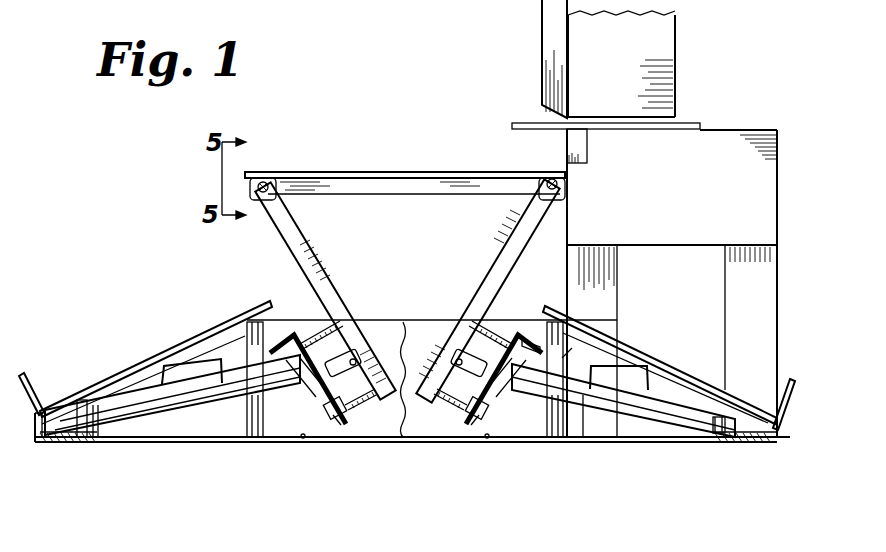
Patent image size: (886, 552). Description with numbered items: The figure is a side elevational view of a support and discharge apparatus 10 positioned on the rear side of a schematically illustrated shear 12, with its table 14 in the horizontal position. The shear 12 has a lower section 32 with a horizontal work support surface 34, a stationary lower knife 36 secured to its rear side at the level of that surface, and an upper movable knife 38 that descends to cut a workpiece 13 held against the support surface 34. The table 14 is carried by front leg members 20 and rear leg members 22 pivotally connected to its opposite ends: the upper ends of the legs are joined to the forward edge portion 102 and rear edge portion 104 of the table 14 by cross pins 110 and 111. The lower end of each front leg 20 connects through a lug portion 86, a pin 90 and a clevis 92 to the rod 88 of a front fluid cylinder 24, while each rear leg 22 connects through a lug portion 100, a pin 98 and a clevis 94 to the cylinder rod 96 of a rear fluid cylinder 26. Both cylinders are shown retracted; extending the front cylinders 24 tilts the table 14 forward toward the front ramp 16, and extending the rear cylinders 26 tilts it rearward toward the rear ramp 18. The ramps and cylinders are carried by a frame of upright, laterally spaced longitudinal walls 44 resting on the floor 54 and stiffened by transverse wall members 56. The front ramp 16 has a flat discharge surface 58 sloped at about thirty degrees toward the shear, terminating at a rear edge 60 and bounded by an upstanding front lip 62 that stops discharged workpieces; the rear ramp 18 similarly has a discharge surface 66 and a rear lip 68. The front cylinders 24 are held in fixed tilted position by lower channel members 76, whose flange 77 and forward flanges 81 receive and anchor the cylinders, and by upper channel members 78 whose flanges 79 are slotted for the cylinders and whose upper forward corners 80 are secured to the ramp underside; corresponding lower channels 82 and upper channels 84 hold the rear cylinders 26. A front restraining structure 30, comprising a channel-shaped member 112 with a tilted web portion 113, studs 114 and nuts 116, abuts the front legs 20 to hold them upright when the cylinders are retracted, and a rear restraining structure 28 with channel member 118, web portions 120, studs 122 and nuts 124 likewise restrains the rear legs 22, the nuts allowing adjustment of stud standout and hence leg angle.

The support and discharge apparatus 10 is at (153, 183).
The shear 12 is at (474, 75).
The workpiece 13 is at (520, 122).
The table 14 is at (352, 163).
The front ramp 16 is at (690, 362).
The rear ramp 18 is at (122, 370).
The front leg members 20 is at (515, 222).
The rear leg members 22 is at (296, 227).
The front fluid cylinders 24 is at (665, 440).
The rear fluid cylinders 26 is at (140, 422).
The rear restraining structure 28 is at (303, 440).
The front restraining structure 30 is at (481, 441).
The lower section 32 is at (780, 200).
The horizontal work support surface 34 is at (753, 128).
The stationary lower knife 36 is at (588, 153).
The upper movable knife 38 is at (545, 40).
The longitudinal walls 44 is at (403, 320).
The floor 54 is at (768, 442).
The transverse wall members 56 is at (252, 440).
The discharge surface portion 58 is at (672, 366).
The rear edge 60 is at (530, 330).
The front lip portion 62 is at (790, 434).
The discharge surface 66 is at (192, 360).
The rear lip 68 is at (28, 417).
The lower channel members 76 is at (740, 437).
The flange 77 is at (698, 440).
The upper channel members 78 is at (622, 432).
The flanges 79 is at (588, 437).
The upper forward corners 80 is at (648, 360).
The forward flanges 81 is at (752, 442).
The lower channels 82 is at (65, 437).
The upper channels 84 is at (170, 366).
The lug portions 86 is at (448, 432).
The cylinder rod 88 is at (522, 438).
The pin 90 is at (455, 437).
The clevis 92 is at (487, 440).
The clevis 94 is at (311, 437).
The cylinder rod 96 is at (282, 435).
The pin 98 is at (350, 440).
The lug portion 100 is at (338, 440).
The forward edge portion 102 is at (557, 172).
The rear edge portion 104 is at (264, 171).
The cross pin 110 is at (563, 194).
The cross pin 111 is at (262, 205).
The channel-shaped member 112 is at (528, 340).
The web portion 113 is at (497, 440).
The studs 114 is at (478, 320).
The nuts 116 is at (510, 340).
The channel member 118 is at (278, 432).
The web portions 120 is at (330, 438).
The studs 122 is at (322, 320).
The nuts 124 is at (280, 345).